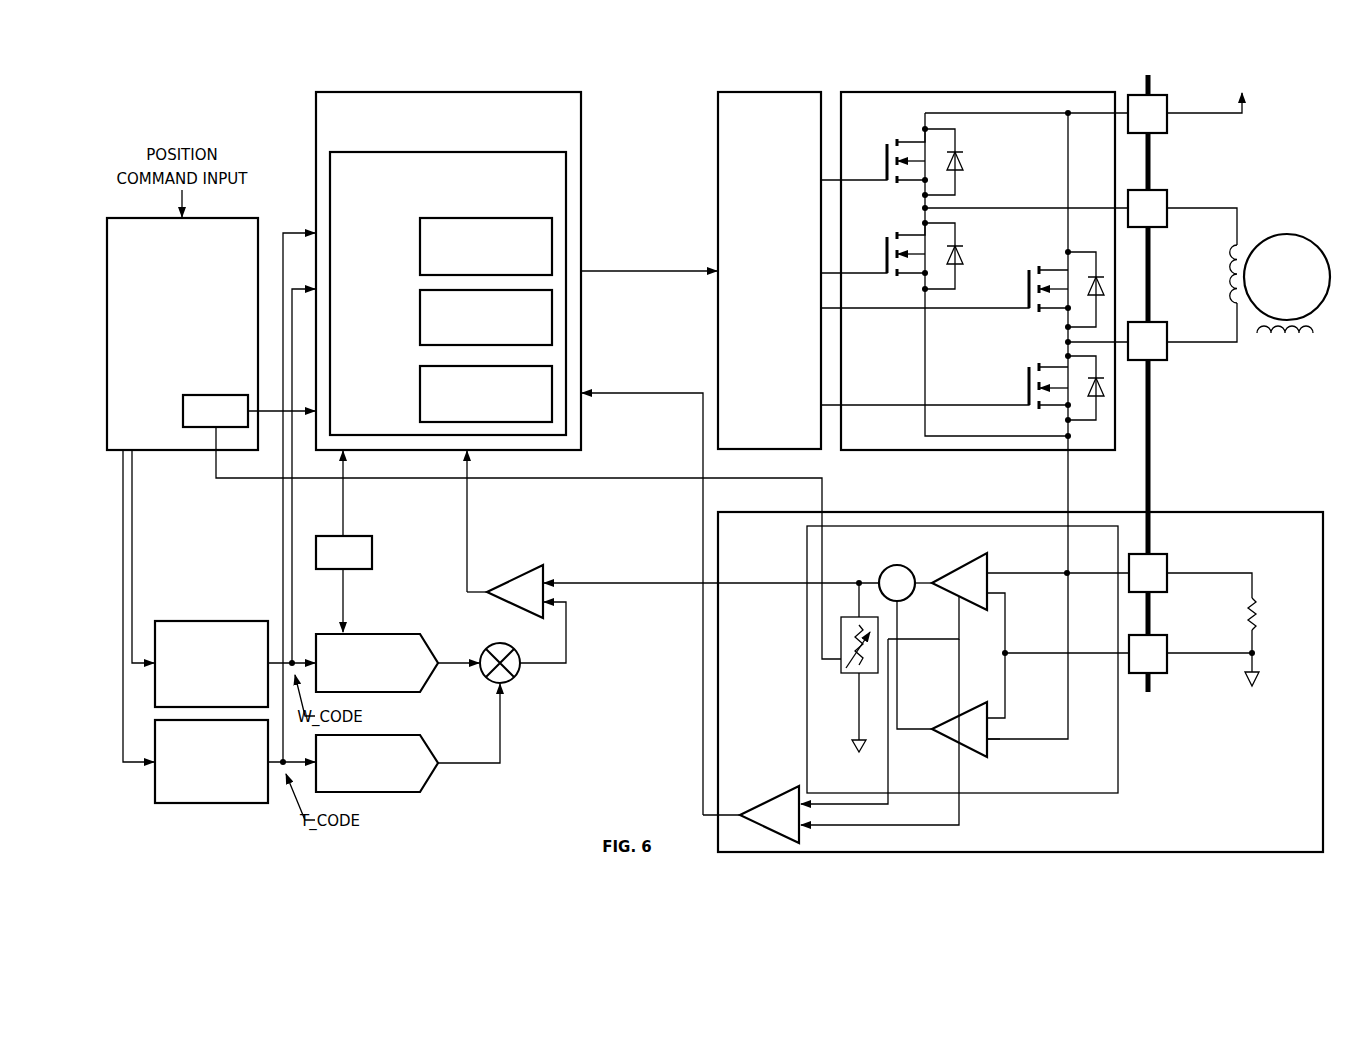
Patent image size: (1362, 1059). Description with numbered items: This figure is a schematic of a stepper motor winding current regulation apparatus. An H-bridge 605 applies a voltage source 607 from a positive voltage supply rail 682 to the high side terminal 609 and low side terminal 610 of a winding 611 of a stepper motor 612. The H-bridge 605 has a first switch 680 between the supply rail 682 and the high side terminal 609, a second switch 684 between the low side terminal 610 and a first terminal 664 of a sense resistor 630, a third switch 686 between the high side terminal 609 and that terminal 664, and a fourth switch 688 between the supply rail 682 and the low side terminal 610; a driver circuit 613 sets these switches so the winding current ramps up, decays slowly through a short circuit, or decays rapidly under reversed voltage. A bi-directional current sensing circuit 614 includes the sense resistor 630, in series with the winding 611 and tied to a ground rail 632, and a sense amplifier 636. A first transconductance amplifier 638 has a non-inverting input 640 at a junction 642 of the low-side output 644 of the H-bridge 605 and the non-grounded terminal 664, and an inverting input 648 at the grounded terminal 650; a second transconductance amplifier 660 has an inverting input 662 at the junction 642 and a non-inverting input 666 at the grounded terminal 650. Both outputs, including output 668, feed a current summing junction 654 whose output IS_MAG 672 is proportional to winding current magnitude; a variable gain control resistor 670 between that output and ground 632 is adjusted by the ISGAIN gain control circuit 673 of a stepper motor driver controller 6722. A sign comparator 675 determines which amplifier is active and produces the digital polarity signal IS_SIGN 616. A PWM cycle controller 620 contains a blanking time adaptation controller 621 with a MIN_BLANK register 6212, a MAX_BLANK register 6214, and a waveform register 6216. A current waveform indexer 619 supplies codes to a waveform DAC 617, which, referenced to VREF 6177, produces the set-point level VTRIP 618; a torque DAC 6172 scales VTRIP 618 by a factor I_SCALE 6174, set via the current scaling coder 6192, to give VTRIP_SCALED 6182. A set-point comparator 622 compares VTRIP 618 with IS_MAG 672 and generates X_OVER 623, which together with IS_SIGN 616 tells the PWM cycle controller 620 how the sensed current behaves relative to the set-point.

The stepper motor driver controller 6722 is at (160, 350).
The gain control circuit ISGAIN 673 is at (183, 412).
The PWM cycle controller 620 is at (315, 148).
The blanking time adaptation controller 621 is at (375, 151).
The MIN_BLANK register 6212 is at (420, 247).
The MAX_BLANK register 6214 is at (420, 318).
The waveform register 6216 is at (420, 392).
The digital polarity signal IS_SIGN 616 is at (649, 395).
The digital output X_OVER 623 is at (458, 519).
The voltage reference source VREF 6177 is at (372, 552).
The waveform DAC 617 is at (392, 634).
The torque DAC 6172 is at (434, 776).
The current waveform indexer 619 is at (211, 621).
The current scaling coder 6192 is at (211, 805).
The analog level VTRIP 618 is at (466, 666).
The factor I_SCALE 6174 is at (503, 734).
The scaled value VTRIP_SCALED 6182 is at (566, 645).
The set-point comparator 622 is at (546, 573).
The control signal output level IS_MAG 672 is at (772, 584).
The driver circuit 613 is at (755, 322).
The H-bridge 605 is at (1004, 454).
The first switch 680 is at (886, 152).
The third switch 686 is at (886, 244).
The fourth switch 688 is at (1023, 277).
The second switch 684 is at (1021, 372).
The low-side output of the H-bridge 644 is at (1070, 484).
The positive voltage supply rail 682 is at (1202, 112).
The voltage source 607 is at (1262, 83).
The high side terminal 609 is at (1235, 210).
The low side terminal 610 is at (1237, 344).
The winding 611 is at (1231, 273).
The stepper motor 612 is at (1286, 234).
The bi-directional current sensing circuit 614 is at (1212, 511).
The sense amplifier 636 is at (1036, 796).
The current summing junction 654 is at (880, 572).
The variable sense amplifier gain control resistor 670 is at (848, 672).
The non-inverting input of the first transconductance amplifier 640 is at (994, 548).
The junction 642 is at (1072, 578).
The inverting input of the first transconductance amplifier 648 is at (1000, 609).
The non-inverting input of the second transconductance amplifier 666 is at (1000, 709).
The second transconductance amplifier 660 is at (948, 739).
The inverting input of the second transconductance amplifier 662 is at (984, 742).
The first transconductance amplifier 638 is at (938, 588).
The output of the second transconductance amplifier 668 is at (898, 676).
The sign comparator 675 is at (772, 794).
The non-grounded terminal of the sense resistor 664 is at (1246, 577).
The sense resistor 630 is at (1248, 615).
The grounded terminal of the sense resistor 650 is at (1208, 655).
The ground rail 632 is at (1257, 685).